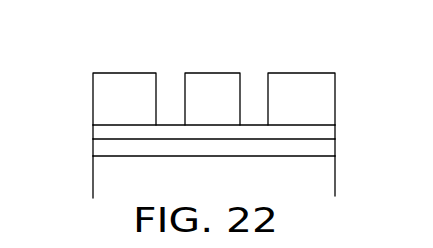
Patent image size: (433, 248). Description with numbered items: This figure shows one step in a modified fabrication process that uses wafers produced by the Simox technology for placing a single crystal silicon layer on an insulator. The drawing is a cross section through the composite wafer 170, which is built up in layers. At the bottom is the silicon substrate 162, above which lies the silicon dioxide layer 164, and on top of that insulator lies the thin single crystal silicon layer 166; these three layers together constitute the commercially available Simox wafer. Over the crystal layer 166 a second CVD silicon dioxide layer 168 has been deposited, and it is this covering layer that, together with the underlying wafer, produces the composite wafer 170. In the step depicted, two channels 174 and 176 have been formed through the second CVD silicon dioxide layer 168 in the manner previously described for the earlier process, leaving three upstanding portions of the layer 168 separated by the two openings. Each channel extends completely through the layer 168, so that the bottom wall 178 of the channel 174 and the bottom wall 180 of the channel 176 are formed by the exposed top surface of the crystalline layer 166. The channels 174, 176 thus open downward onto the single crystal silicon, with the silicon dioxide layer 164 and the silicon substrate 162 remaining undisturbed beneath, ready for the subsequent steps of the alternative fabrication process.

The silicon substrate 162 is at (317, 181).
The silicon dioxide layer 164 is at (103, 147).
The thin single crystal silicon layer 166 is at (318, 130).
The second CVD silicon dioxide layer 168 is at (326, 104).
The composite wafer 170 is at (279, 52).
The channel 174 is at (157, 90).
The channel 176 is at (240, 86).
The bottom wall 178 is at (171, 123).
The bottom wall 180 is at (248, 123).